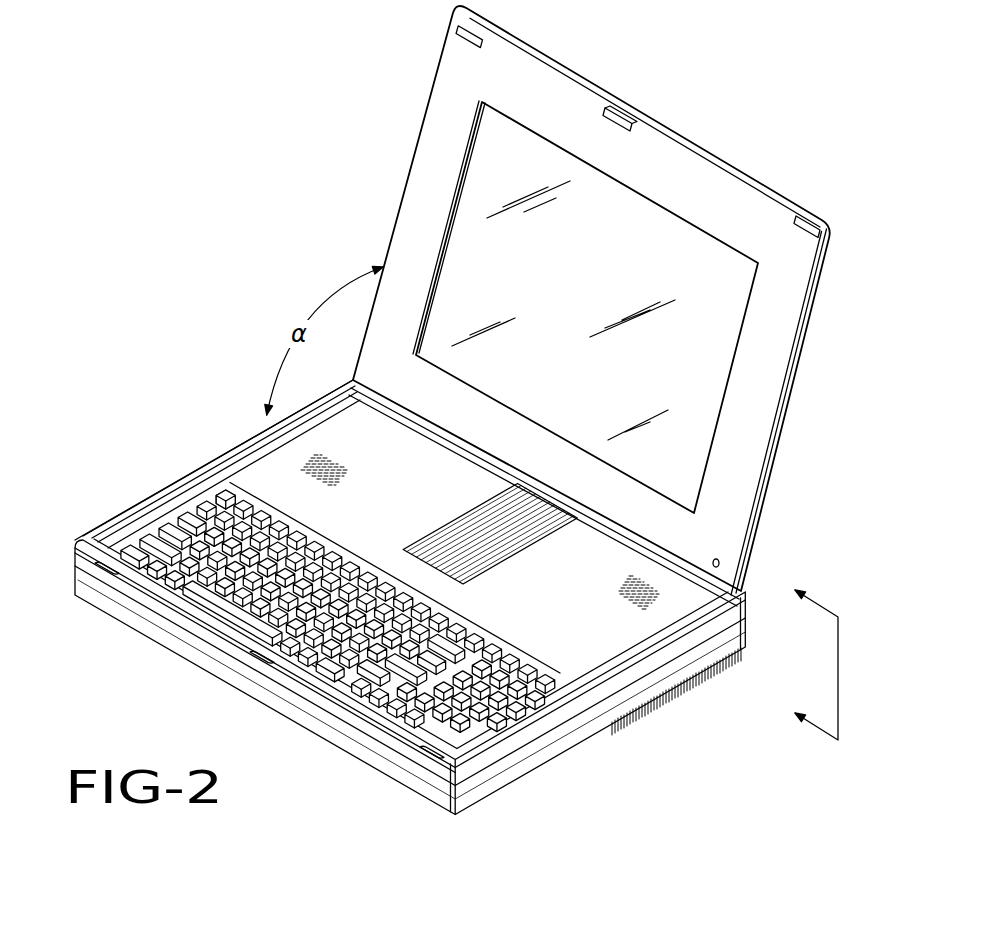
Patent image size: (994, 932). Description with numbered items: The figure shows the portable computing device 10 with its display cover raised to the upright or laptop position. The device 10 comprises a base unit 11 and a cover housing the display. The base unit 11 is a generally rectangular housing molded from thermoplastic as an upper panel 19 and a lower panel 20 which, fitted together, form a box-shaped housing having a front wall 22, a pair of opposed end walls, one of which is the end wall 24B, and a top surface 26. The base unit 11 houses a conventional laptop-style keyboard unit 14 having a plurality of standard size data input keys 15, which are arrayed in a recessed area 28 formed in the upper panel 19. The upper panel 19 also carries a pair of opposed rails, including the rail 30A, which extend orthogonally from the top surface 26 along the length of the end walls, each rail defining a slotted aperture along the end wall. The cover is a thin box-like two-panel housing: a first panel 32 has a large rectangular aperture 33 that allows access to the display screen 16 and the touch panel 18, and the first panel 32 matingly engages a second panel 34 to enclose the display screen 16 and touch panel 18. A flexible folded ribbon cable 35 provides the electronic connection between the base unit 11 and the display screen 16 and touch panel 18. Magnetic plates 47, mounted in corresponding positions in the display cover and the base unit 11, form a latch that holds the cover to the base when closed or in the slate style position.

The portable computing device 10 is at (799, 650).
The base unit 11 is at (545, 775).
The keyboard unit 14 is at (165, 525).
The data input keys 15 is at (213, 600).
The display screen 16 is at (595, 407).
The touch panel 18 is at (598, 282).
The upper panel 19 is at (540, 740).
The lower panel 20 is at (487, 794).
The front wall 22 is at (233, 682).
The end wall 24B is at (588, 700).
The top surface 26 is at (578, 614).
The recessed area 28 is at (250, 503).
The rail 30A is at (232, 446).
The first panel 32 is at (828, 252).
The rectangular aperture 33 is at (462, 155).
The second panel 34 is at (787, 412).
The flexible folded ribbon cable 35 is at (490, 527).
The magnetic plates 47 is at (624, 118).